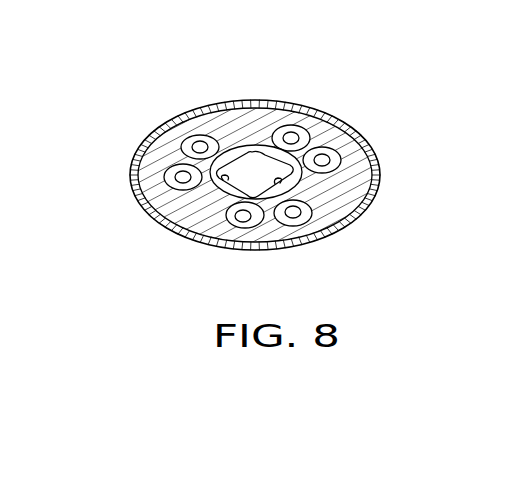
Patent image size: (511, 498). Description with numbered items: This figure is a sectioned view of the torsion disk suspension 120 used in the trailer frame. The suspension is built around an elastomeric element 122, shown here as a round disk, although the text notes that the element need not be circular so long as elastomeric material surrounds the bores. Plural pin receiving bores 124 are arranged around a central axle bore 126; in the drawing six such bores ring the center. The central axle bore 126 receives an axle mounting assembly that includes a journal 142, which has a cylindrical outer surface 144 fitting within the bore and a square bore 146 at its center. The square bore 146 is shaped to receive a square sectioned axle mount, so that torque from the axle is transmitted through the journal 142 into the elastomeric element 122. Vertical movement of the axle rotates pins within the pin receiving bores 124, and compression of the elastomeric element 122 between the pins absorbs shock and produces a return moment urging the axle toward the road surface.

The torsion disk suspension 120 is at (133, 107).
The elastomeric element 122 is at (178, 200).
The pin receiving bores 124 is at (300, 131).
The central axle bore 126 is at (280, 183).
The journal 142 is at (212, 162).
The cylindrical outer surface 144 is at (250, 149).
The square bore 146 is at (223, 180).